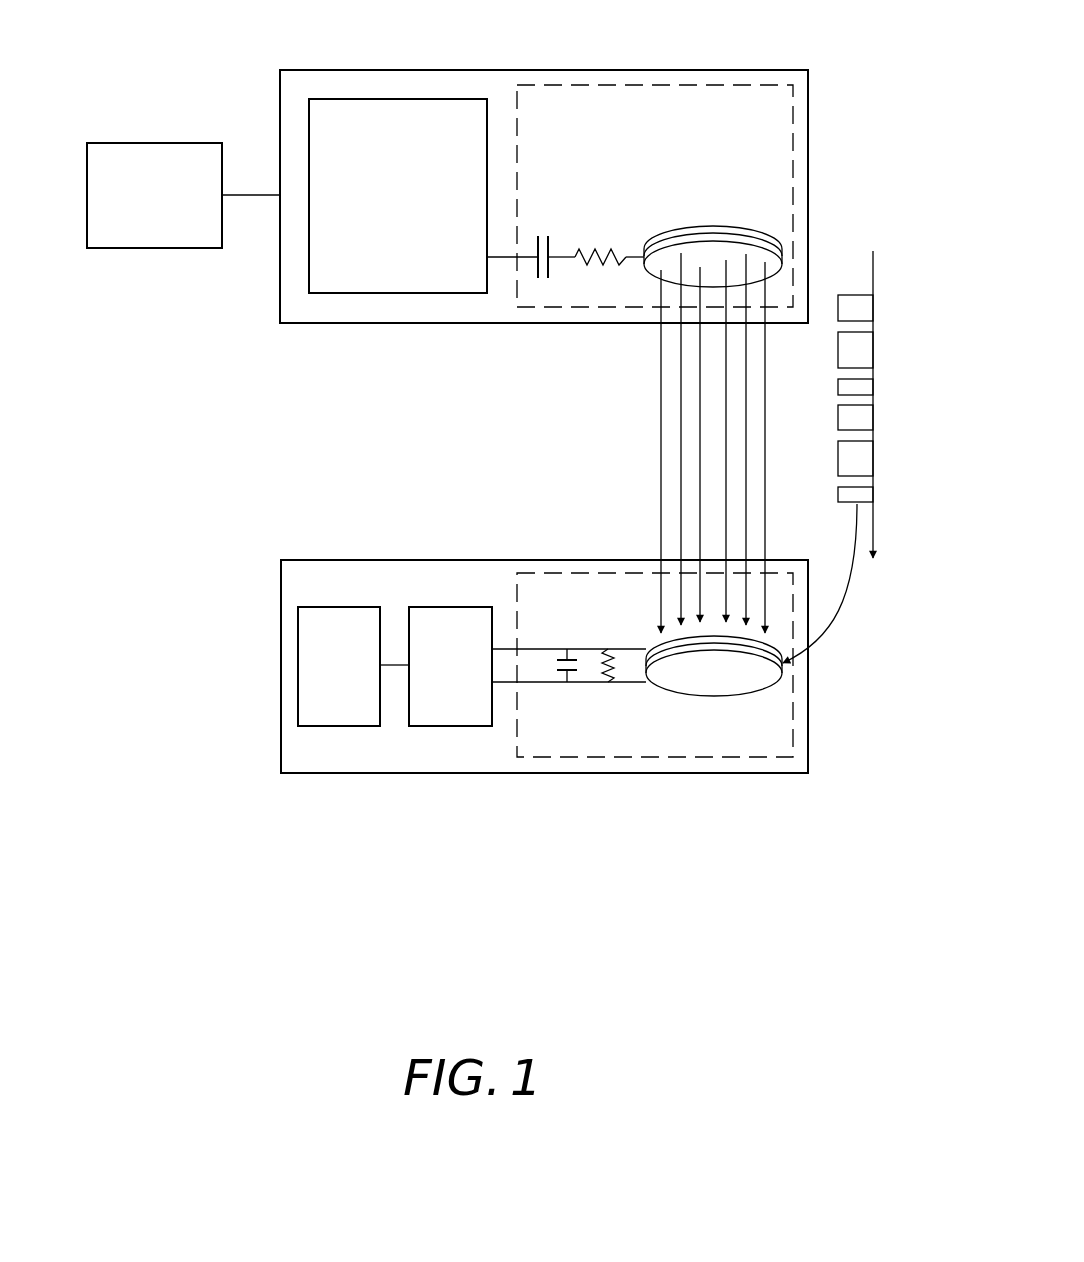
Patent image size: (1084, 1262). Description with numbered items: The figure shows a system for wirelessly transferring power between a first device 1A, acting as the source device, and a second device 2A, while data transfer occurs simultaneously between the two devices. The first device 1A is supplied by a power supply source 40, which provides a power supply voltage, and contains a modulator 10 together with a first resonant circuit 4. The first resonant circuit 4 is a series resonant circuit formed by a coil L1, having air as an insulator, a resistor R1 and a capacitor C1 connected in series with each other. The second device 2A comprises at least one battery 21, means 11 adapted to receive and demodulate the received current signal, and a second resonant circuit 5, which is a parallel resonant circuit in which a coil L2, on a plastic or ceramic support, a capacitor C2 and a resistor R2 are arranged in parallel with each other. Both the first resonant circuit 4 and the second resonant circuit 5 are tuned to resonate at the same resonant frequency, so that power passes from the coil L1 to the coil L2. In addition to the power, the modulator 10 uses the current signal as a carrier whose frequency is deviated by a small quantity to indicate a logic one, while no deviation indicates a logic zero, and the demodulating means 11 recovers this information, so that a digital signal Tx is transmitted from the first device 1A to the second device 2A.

The power supply source 40 is at (153, 143).
The modulator 10 is at (398, 99).
The first resonant circuit 4 is at (608, 85).
The first device 1A is at (809, 195).
The battery 21 is at (337, 607).
The means adapted to receive and demodulate 11 is at (448, 607).
The second resonant circuit 5 is at (740, 760).
The second device 2A is at (809, 670).
The capacitor C1 is at (549, 243).
The resistor R1 is at (600, 242).
The coil L1 is at (712, 248).
The capacitor C2 is at (552, 665).
The resistor R2 is at (624, 665).
The coil L2 is at (705, 660).
The digital signal Tx is at (820, 583).